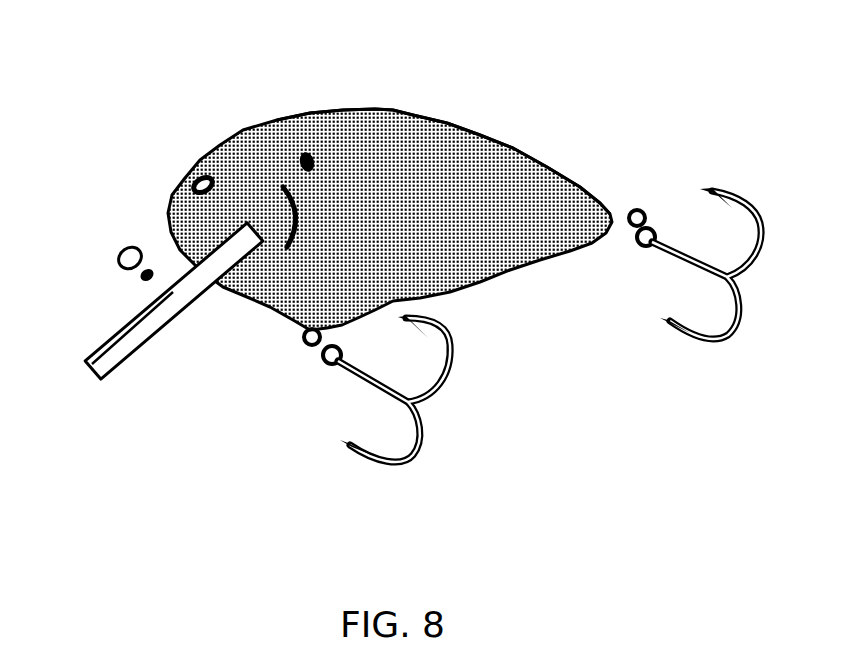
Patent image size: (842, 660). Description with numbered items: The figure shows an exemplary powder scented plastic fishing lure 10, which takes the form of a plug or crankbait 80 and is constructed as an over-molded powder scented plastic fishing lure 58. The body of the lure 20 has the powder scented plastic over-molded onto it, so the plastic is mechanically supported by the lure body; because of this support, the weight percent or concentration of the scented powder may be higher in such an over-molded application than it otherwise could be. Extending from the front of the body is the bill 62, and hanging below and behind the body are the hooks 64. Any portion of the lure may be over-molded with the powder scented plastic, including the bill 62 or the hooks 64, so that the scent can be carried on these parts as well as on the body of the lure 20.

The powder scented plastic fishing lure 10 is at (210, 126).
The body of the lure 20 is at (263, 127).
The over-molded powder scented plastic fishing lure 58 is at (375, 105).
The plug or crankbait 80 is at (482, 130).
The bill 62 is at (120, 338).
The hooks 64 is at (708, 190).